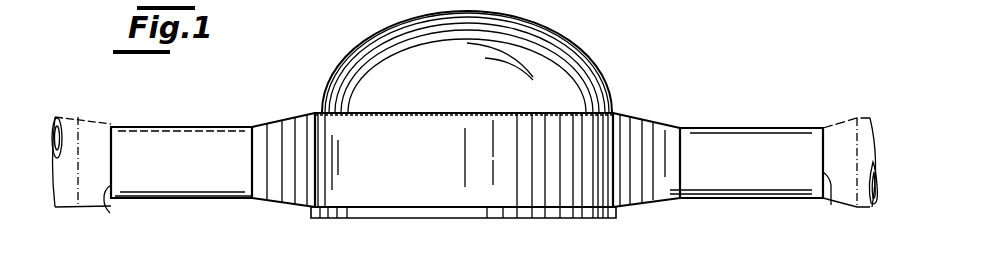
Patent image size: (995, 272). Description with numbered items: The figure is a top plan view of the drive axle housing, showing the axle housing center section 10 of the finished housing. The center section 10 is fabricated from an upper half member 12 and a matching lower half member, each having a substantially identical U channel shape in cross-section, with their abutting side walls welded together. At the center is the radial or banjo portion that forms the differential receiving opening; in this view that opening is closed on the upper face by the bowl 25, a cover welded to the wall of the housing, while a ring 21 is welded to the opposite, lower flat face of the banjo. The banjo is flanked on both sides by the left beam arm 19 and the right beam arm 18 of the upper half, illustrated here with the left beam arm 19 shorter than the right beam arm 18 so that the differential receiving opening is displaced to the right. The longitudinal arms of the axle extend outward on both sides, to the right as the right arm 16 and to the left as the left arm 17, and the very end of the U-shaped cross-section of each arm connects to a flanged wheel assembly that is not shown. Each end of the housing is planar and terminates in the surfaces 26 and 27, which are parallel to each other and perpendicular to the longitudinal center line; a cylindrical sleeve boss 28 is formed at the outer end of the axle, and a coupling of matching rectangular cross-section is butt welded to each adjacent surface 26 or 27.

The axle housing center section 10 is at (318, 96).
The upper half member 12 is at (425, 157).
The right longitudinal arm 16 is at (721, 173).
The left longitudinal arm 17 is at (169, 151).
The right beam arm 18 is at (760, 135).
The left beam arm 19 is at (190, 187).
The ring 21 is at (537, 215).
The bowl 25 is at (563, 63).
The end surface 26 is at (119, 212).
The end surface 27 is at (832, 202).
The sleeve boss 28 is at (95, 128).